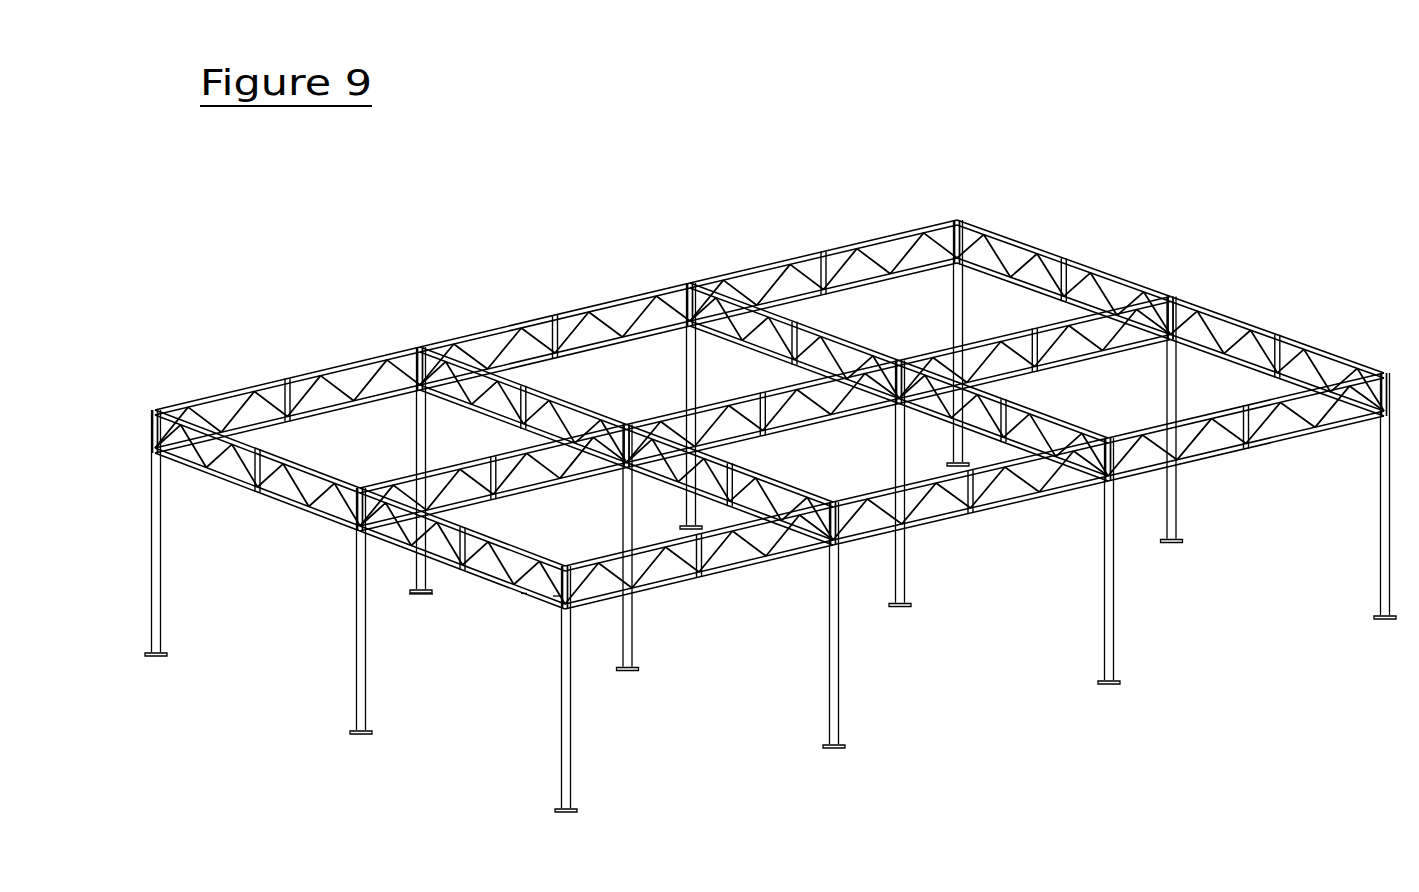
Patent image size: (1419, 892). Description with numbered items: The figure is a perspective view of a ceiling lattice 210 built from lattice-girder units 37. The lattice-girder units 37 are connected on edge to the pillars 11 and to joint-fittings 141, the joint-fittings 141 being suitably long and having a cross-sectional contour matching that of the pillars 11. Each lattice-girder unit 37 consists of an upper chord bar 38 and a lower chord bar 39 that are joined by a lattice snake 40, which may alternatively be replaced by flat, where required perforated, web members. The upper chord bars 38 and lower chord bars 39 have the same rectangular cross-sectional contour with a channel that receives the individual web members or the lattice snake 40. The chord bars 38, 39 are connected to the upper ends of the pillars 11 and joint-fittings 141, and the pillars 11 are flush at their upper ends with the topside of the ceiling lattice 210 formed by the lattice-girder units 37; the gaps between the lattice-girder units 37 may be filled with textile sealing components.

The ceiling lattice 210 is at (719, 409).
The lattice-girder unit 37 is at (770, 414).
The joint-fitting 141 is at (612, 379).
The pillar 11 is at (770, 516).
The upper chord bar 38 is at (415, 636).
The lower chord bar 39 is at (533, 678).
The lattice snake 40 is at (492, 610).